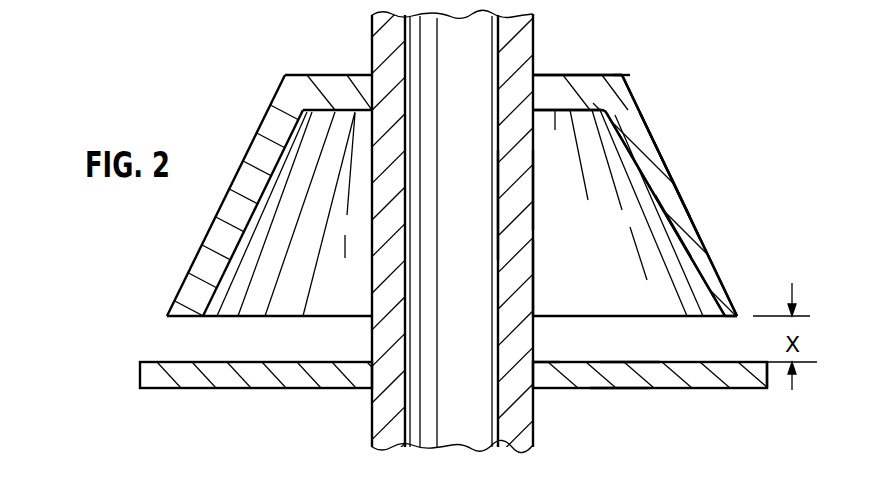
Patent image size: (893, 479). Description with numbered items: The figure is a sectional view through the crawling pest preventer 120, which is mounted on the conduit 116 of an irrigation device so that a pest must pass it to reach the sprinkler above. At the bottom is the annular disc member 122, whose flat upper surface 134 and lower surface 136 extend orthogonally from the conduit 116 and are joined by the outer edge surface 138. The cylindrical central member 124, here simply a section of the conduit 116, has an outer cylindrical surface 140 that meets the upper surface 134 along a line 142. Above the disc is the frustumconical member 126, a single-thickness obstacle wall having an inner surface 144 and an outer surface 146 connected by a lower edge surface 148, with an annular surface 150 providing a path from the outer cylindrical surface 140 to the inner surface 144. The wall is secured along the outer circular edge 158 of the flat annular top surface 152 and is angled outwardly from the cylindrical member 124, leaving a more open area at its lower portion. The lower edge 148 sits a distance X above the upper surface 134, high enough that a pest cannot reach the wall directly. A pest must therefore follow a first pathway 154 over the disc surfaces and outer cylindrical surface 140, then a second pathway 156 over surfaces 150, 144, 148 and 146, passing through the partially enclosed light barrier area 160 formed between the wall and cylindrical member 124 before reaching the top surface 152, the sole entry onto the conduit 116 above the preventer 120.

The conduit 116 is at (492, 78).
The crawling pest preventer 120 is at (642, 95).
The annular disc member 122 is at (704, 388).
The cylindrical central member 124 is at (535, 200).
The frustumconical member 126 is at (658, 132).
The upper surface 134 is at (627, 361).
The lower surface 136 is at (622, 388).
The outer edge surface 138 is at (766, 388).
The outer cylindrical surface 140 is at (534, 277).
The line 142 is at (540, 361).
The inner surface 144 is at (645, 188).
The outer surface 146 is at (665, 162).
The edge surface 148 is at (730, 318).
The annular surface 150 is at (547, 112).
The top surface 152 is at (547, 75).
The first pathway 154 is at (534, 186).
The second pathway 156 is at (688, 207).
The outer circular edge 158 is at (622, 74).
The light barrier area 160 is at (652, 266).